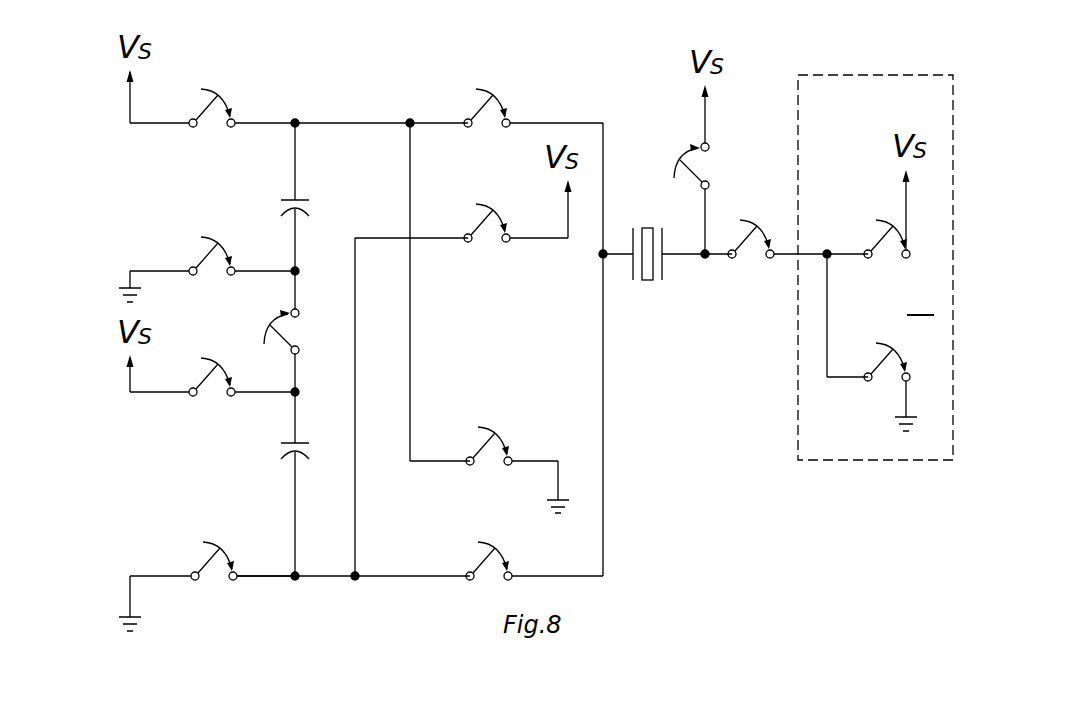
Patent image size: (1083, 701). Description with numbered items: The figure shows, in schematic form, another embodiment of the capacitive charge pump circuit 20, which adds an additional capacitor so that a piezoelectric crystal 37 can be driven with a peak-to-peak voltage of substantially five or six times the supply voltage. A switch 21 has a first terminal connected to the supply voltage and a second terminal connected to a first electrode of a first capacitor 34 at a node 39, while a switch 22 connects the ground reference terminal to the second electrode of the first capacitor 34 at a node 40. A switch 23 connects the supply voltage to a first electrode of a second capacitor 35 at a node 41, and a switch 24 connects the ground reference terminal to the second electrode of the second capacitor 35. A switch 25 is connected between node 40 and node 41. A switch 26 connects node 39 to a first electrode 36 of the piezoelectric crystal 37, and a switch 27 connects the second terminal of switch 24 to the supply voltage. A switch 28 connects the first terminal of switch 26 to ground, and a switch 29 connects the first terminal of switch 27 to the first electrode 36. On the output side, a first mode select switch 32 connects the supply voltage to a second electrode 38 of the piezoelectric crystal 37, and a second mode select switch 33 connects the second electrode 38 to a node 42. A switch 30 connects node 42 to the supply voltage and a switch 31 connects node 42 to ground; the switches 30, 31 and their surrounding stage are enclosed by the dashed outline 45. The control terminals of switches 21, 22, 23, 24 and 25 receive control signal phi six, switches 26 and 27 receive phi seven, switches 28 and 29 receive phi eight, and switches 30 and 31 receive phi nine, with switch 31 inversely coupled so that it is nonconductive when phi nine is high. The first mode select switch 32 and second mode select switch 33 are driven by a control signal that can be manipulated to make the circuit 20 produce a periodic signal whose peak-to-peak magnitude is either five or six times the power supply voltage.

The capacitive charge pump circuit 20 is at (276, 610).
The switch 21 is at (214, 118).
The switch 22 is at (215, 267).
The switch 23 is at (215, 390).
The switch 24 is at (207, 580).
The switch 25 is at (290, 332).
The switch 26 is at (487, 117).
The switch 27 is at (492, 225).
The switch 28 is at (487, 458).
The switch 29 is at (487, 568).
The switch 30 is at (887, 248).
The switch 31 is at (887, 370).
The first mode select switch 32 is at (703, 163).
The second mode select switch 33 is at (743, 253).
The first capacitor 34 is at (300, 200).
The second capacitor 35 is at (292, 441).
The first electrode 36 is at (633, 240).
The piezoelectric crystal 37 is at (645, 228).
The second electrode 38 is at (662, 275).
The node 39 is at (297, 120).
The node 40 is at (297, 268).
The node 41 is at (300, 391).
The node 42 is at (829, 256).
The output stage 45 is at (848, 460).